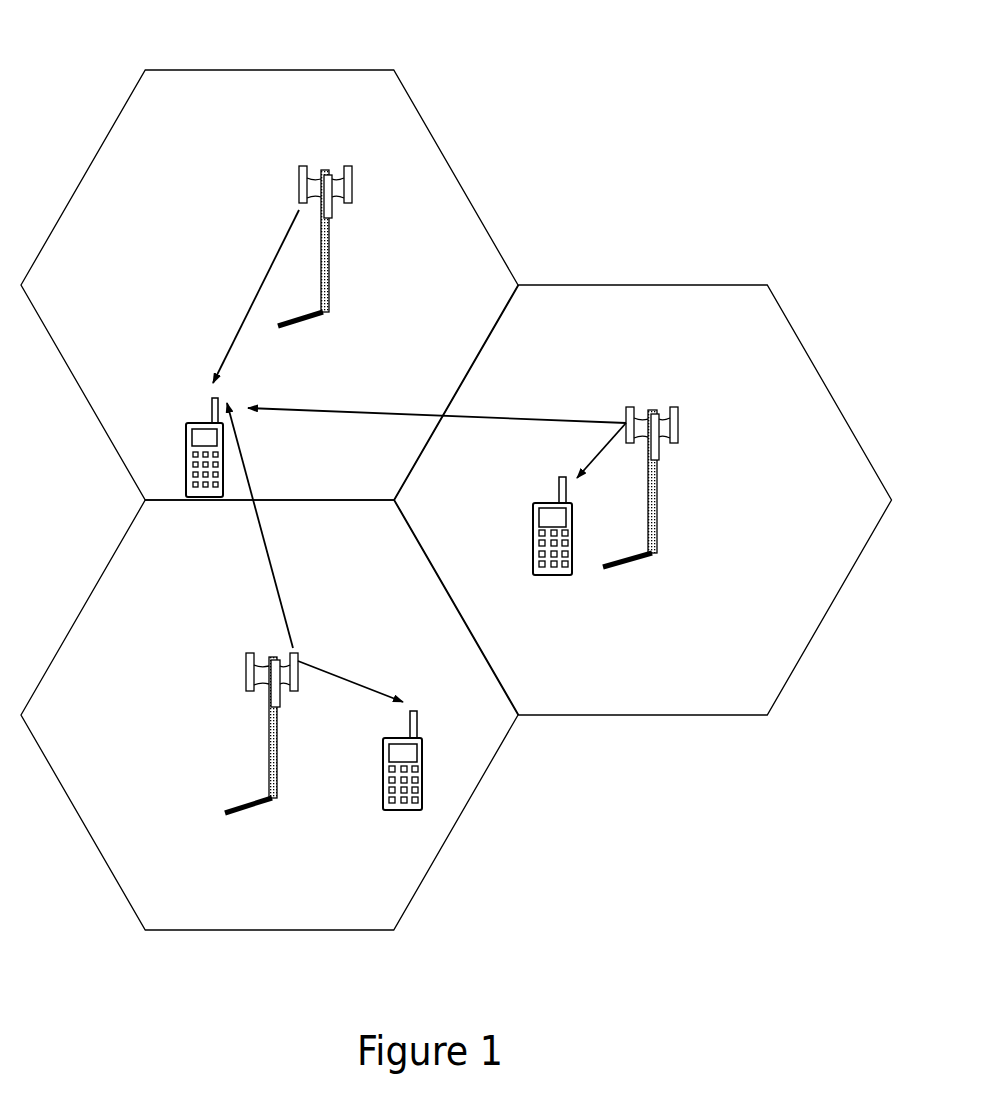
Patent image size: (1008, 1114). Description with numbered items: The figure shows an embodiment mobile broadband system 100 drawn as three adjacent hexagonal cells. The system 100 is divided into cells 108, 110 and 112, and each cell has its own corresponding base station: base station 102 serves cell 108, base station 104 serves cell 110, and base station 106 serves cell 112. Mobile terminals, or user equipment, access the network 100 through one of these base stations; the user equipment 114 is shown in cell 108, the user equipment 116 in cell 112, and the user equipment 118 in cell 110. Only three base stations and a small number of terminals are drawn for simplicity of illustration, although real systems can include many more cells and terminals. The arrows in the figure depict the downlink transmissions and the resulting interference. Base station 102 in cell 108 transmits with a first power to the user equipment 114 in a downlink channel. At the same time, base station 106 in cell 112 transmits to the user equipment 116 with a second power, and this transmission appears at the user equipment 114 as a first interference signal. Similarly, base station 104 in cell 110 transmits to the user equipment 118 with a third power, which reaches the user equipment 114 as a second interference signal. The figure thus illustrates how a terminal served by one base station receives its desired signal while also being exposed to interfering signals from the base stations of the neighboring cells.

The mobile broadband system 100 is at (184, 33).
The base station 102 is at (328, 298).
The base station 104 is at (657, 528).
The base station 106 is at (277, 765).
The cell 108 is at (197, 108).
The cell 110 is at (568, 320).
The cell 112 is at (182, 540).
The user equipment 114 is at (183, 475).
The user equipment 116 is at (422, 795).
The user equipment 118 is at (572, 560).